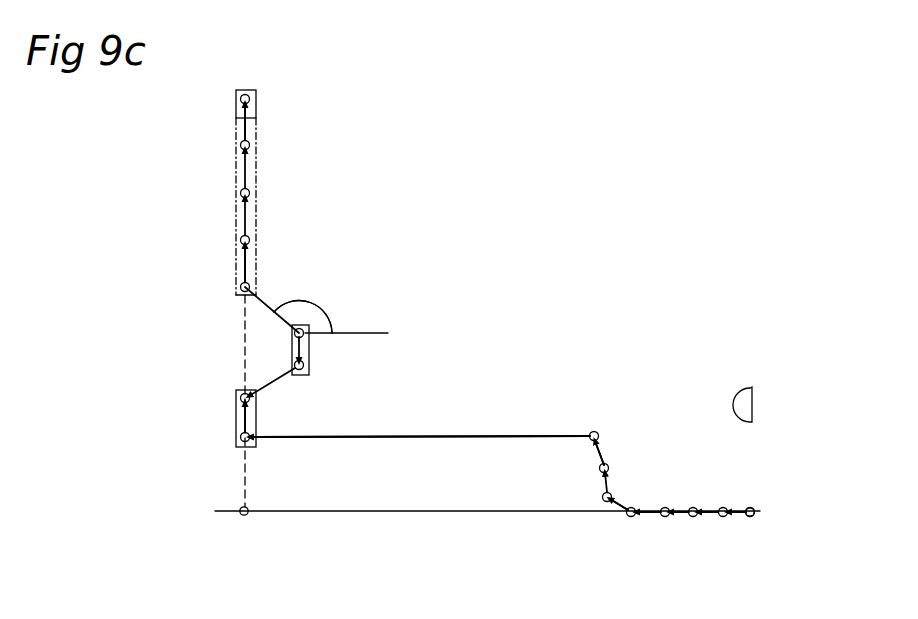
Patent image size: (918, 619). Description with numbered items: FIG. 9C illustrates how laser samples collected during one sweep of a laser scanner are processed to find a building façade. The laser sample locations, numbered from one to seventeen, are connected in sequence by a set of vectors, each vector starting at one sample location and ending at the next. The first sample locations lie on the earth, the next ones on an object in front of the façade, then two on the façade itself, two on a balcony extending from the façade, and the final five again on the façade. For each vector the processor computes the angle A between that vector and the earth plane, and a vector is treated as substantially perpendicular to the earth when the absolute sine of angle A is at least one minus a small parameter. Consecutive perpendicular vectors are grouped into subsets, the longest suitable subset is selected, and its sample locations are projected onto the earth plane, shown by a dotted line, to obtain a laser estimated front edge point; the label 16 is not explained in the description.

The angle A is at (313, 317).
The robot start point 16 is at (764, 512).